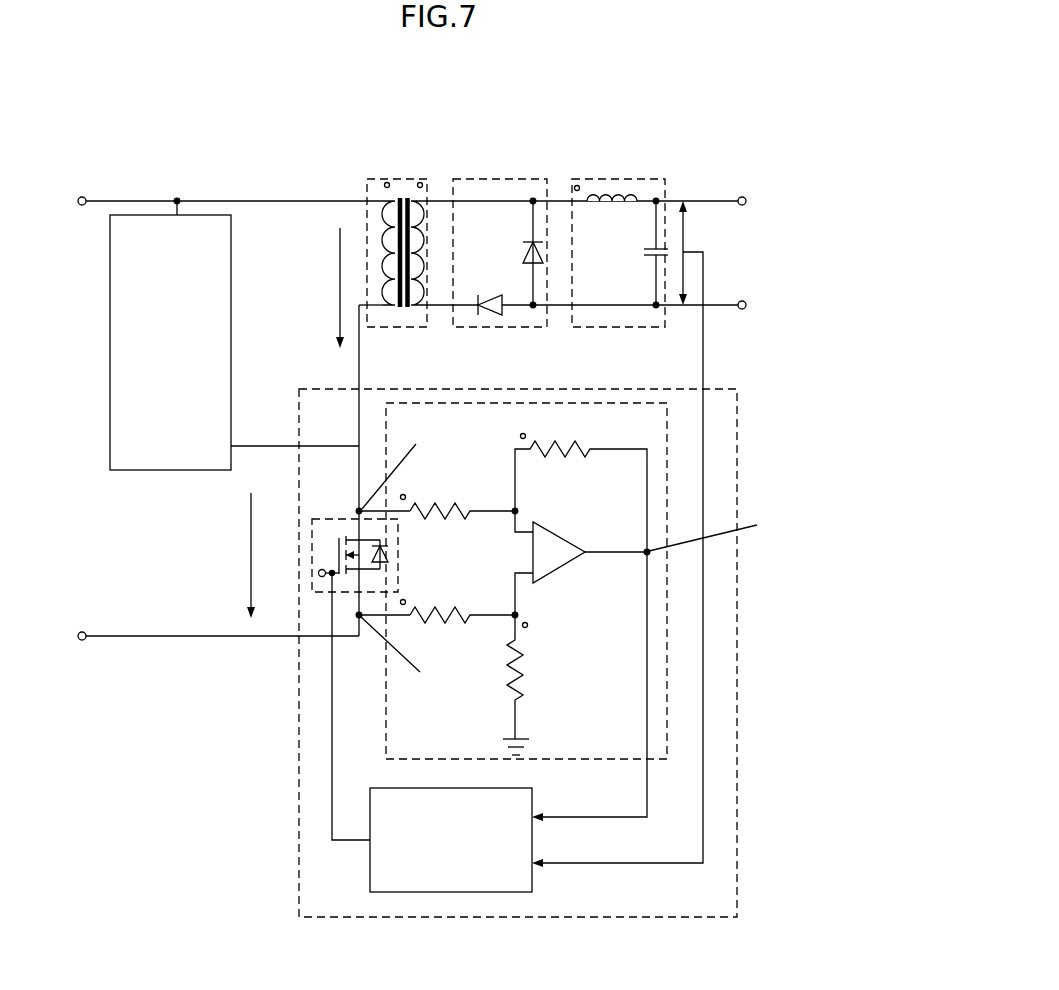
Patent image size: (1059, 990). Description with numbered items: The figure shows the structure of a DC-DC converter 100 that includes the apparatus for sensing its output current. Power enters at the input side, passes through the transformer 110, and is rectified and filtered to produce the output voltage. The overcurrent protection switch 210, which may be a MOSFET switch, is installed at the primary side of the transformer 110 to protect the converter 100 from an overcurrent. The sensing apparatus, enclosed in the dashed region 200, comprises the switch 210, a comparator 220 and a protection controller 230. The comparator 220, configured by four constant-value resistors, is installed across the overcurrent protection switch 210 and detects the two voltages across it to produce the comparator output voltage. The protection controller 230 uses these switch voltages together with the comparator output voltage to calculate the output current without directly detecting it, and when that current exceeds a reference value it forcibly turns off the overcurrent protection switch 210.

The converter 100 is at (727, 158).
The transformer 110 is at (423, 178).
The protection circuit 200 is at (725, 386).
The overcurrent protection switch 210 is at (328, 518).
The comparator 220 is at (672, 431).
The protection controller 230 is at (450, 893).